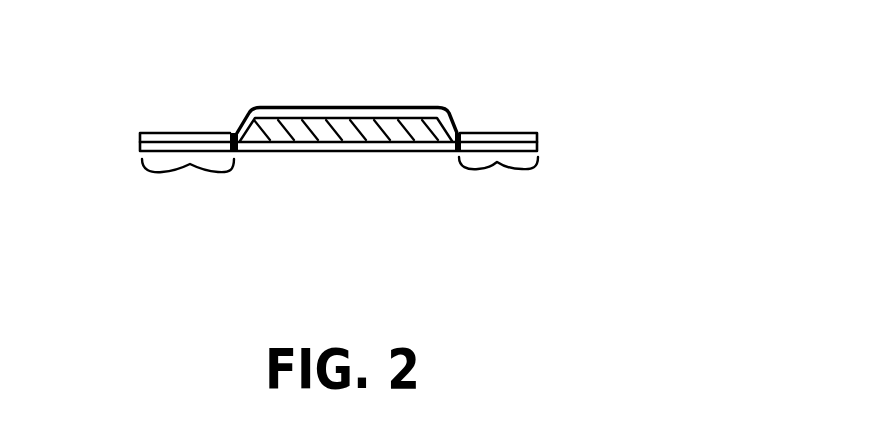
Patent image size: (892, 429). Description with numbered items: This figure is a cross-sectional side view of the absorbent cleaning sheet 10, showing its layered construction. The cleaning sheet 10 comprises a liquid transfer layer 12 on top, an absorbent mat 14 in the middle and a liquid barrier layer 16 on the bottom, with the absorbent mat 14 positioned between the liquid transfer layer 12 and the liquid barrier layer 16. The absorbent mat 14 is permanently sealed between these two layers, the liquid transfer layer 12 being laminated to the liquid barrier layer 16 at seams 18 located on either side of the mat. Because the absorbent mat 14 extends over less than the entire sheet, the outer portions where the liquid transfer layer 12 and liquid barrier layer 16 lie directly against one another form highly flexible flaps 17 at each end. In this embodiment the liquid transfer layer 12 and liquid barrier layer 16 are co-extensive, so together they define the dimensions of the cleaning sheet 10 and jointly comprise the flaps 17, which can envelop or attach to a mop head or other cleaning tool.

The cleaning sheet 10 is at (270, 56).
The liquid transfer layer 12 is at (322, 107).
The absorbent mat 14 is at (281, 137).
The liquid barrier layer 16 is at (358, 152).
The flaps 17 is at (192, 175).
The seams 18 is at (233, 133).